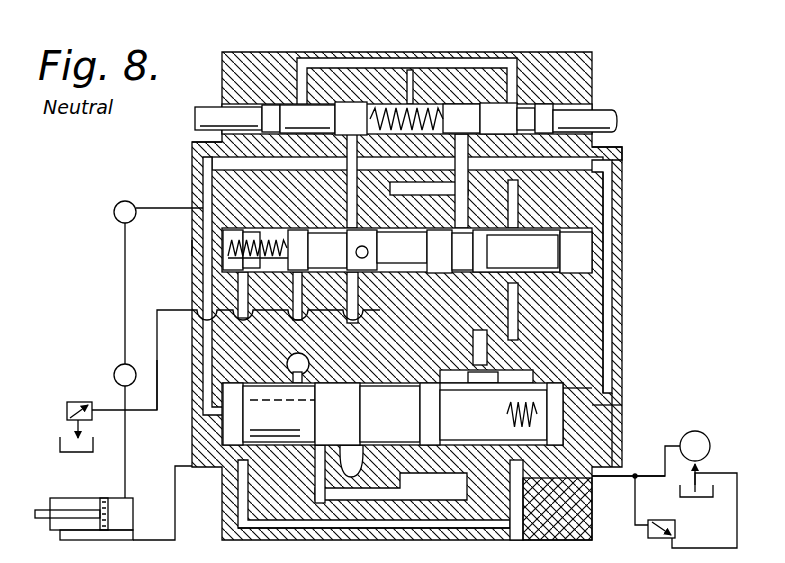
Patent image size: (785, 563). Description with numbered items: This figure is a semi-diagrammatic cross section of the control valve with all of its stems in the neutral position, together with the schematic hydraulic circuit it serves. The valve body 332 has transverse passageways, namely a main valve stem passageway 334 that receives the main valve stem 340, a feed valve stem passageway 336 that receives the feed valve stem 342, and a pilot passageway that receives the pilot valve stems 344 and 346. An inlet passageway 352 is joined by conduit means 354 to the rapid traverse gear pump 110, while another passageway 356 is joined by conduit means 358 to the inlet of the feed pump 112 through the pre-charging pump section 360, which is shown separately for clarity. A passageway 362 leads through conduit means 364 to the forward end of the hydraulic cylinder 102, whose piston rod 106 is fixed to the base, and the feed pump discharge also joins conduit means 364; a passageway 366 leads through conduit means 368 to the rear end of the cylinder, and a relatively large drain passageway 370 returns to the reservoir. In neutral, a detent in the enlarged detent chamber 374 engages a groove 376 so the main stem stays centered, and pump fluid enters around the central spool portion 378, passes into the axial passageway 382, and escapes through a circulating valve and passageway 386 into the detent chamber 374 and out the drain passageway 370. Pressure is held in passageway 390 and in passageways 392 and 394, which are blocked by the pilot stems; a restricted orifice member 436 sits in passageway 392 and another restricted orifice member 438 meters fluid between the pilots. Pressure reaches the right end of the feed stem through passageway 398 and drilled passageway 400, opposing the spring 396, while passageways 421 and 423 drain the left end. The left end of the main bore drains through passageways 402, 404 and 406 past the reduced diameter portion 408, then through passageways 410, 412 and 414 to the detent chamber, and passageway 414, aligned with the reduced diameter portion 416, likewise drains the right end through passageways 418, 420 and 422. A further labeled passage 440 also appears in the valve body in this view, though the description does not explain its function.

The hydraulic cylinder 102 is at (113, 531).
The piston rod 106 is at (67, 508).
The rapid traverse gear pump 110 is at (707, 432).
The feed pump 112 is at (112, 378).
The valve body 332 is at (595, 97).
The main valve stem passageway 334 is at (570, 365).
The feed valve stem passageway 336 is at (520, 308).
The main valve stem 340 is at (590, 437).
The feed valve stem 342 is at (557, 257).
The pilot valve stem 344 is at (353, 108).
The pilot valve stem 346 is at (470, 108).
The inlet passageway 352 is at (350, 478).
The conduit means 354 is at (611, 482).
The passageway 356 is at (200, 222).
The conduit means 358 is at (123, 270).
The pre-charging pump section 360 is at (125, 198).
The passageway 362 is at (385, 245).
The conduit means 364 is at (158, 398).
The passageway 366 is at (280, 307).
The conduit means 368 is at (185, 511).
The drain passageway 370 is at (523, 512).
The detent chamber 374 is at (622, 437).
The groove 376 is at (501, 414).
The central spool portion 378 is at (486, 376).
The axially extending passageway 382 is at (398, 395).
The passageway 386 is at (331, 414).
The passageway 390 is at (312, 362).
The passageway 392 is at (367, 160).
The passageway 394 is at (372, 176).
The spring 396 is at (196, 248).
The passageway 398 is at (222, 500).
The drilled passageway 400 is at (530, 546).
The passageway 402 is at (196, 308).
The passageway 404 is at (258, 170).
The passageway 406 is at (200, 141).
The reduced diameter portion 408 is at (311, 105).
The passageway 410 is at (222, 95).
The passageway 412 is at (353, 50).
The passageway 414 is at (585, 303).
The reduced diameter portion 416 is at (525, 103).
The passageway 418 is at (610, 377).
The passageway 420 is at (608, 182).
The passageway 421 is at (178, 466).
The passageway 422 is at (600, 150).
The passageway 423 is at (238, 525).
The restricted orifice member 436 is at (335, 307).
The restricted orifice member 438 is at (405, 98).
The passage 440 is at (470, 326).